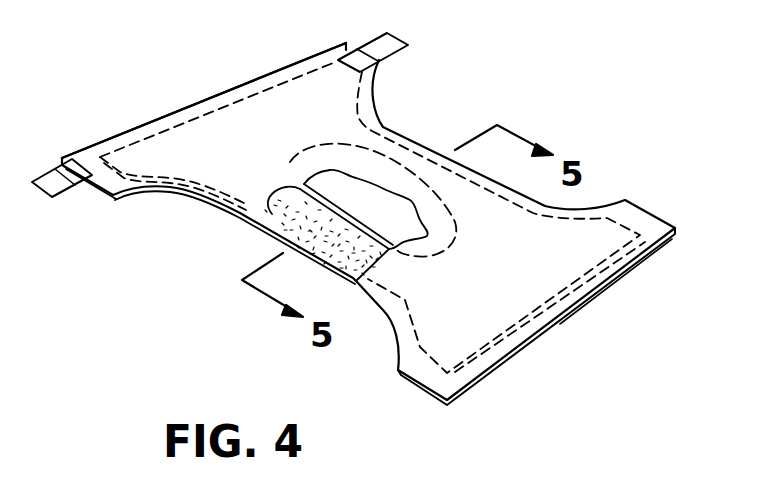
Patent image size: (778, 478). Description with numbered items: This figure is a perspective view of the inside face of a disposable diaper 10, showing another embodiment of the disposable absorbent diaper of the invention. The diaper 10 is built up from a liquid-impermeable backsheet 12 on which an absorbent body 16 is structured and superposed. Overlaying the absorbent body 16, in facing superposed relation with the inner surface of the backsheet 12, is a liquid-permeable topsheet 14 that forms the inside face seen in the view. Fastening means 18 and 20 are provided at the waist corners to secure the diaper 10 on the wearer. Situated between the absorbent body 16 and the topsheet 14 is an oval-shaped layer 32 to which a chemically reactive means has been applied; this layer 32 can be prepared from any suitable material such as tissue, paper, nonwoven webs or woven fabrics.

The diaper 10 is at (553, 328).
The backsheet 12 is at (488, 378).
The topsheet 14 is at (190, 106).
The absorbent body 16 is at (348, 207).
The fastening means 18 is at (58, 200).
The fastening means 20 is at (405, 52).
The oval-shaped layer 32 is at (293, 232).